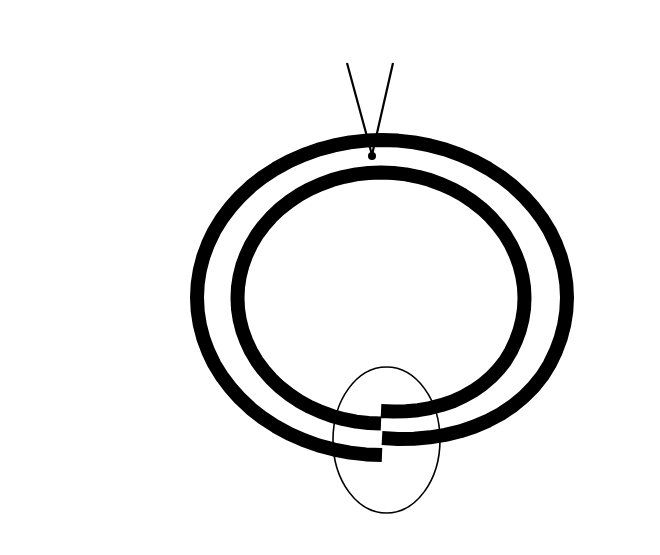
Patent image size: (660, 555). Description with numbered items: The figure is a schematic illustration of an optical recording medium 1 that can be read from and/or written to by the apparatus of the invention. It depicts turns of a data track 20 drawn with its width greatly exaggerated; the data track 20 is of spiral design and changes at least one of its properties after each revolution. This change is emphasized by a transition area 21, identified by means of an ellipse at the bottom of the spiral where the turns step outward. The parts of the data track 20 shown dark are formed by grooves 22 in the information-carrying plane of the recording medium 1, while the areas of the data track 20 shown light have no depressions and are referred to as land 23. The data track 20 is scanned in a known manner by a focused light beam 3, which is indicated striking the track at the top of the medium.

The recording medium 1 is at (230, 170).
The focused light beam 3 is at (381, 90).
The data track 20 is at (583, 297).
The transition area 21 is at (436, 482).
The grooves 22 is at (553, 218).
The land 23 is at (498, 197).